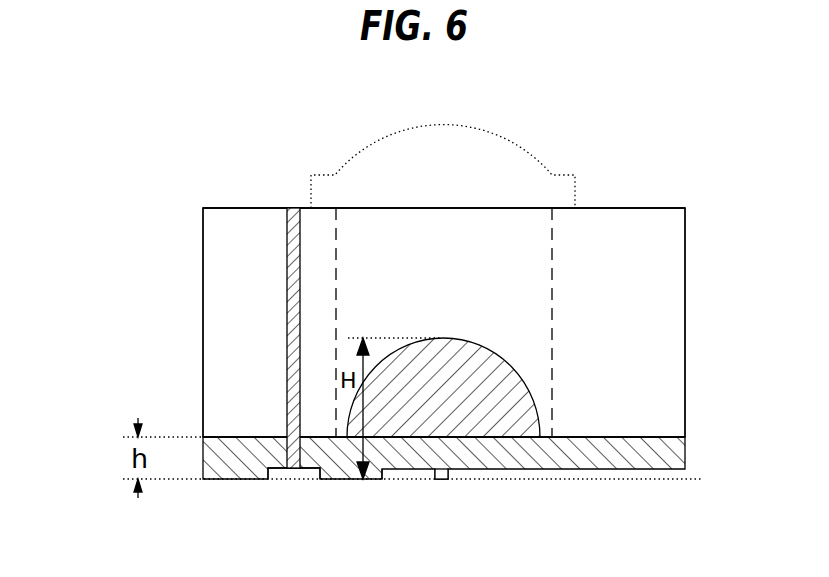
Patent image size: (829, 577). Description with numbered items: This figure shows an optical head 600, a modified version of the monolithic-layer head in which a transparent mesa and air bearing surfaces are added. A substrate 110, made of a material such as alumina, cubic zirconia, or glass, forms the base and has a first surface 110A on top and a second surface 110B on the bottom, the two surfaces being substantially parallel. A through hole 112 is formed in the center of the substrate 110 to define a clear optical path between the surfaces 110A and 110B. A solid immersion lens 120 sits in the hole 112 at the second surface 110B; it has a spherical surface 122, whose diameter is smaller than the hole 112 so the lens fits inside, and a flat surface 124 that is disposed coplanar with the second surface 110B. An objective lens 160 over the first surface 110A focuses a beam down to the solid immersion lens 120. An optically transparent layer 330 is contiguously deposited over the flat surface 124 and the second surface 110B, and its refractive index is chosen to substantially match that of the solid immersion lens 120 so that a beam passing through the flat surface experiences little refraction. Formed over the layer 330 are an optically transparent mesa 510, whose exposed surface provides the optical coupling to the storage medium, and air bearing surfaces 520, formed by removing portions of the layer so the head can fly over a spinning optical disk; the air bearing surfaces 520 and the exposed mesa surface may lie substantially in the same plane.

The optical head 600 is at (140, 227).
The through hole 112 is at (388, 245).
The objective lens 160 is at (528, 162).
The first surface 110A is at (630, 208).
The substrate 110 is at (650, 267).
The spherical surface 122 is at (502, 356).
The solid immersion lens 120 is at (465, 400).
The second surface 110B is at (648, 437).
The optically transparent layer 330 is at (684, 449).
The flat surface 124 is at (412, 437).
The mesa structure 510 is at (443, 480).
The air bearing surfaces 520 is at (333, 480).